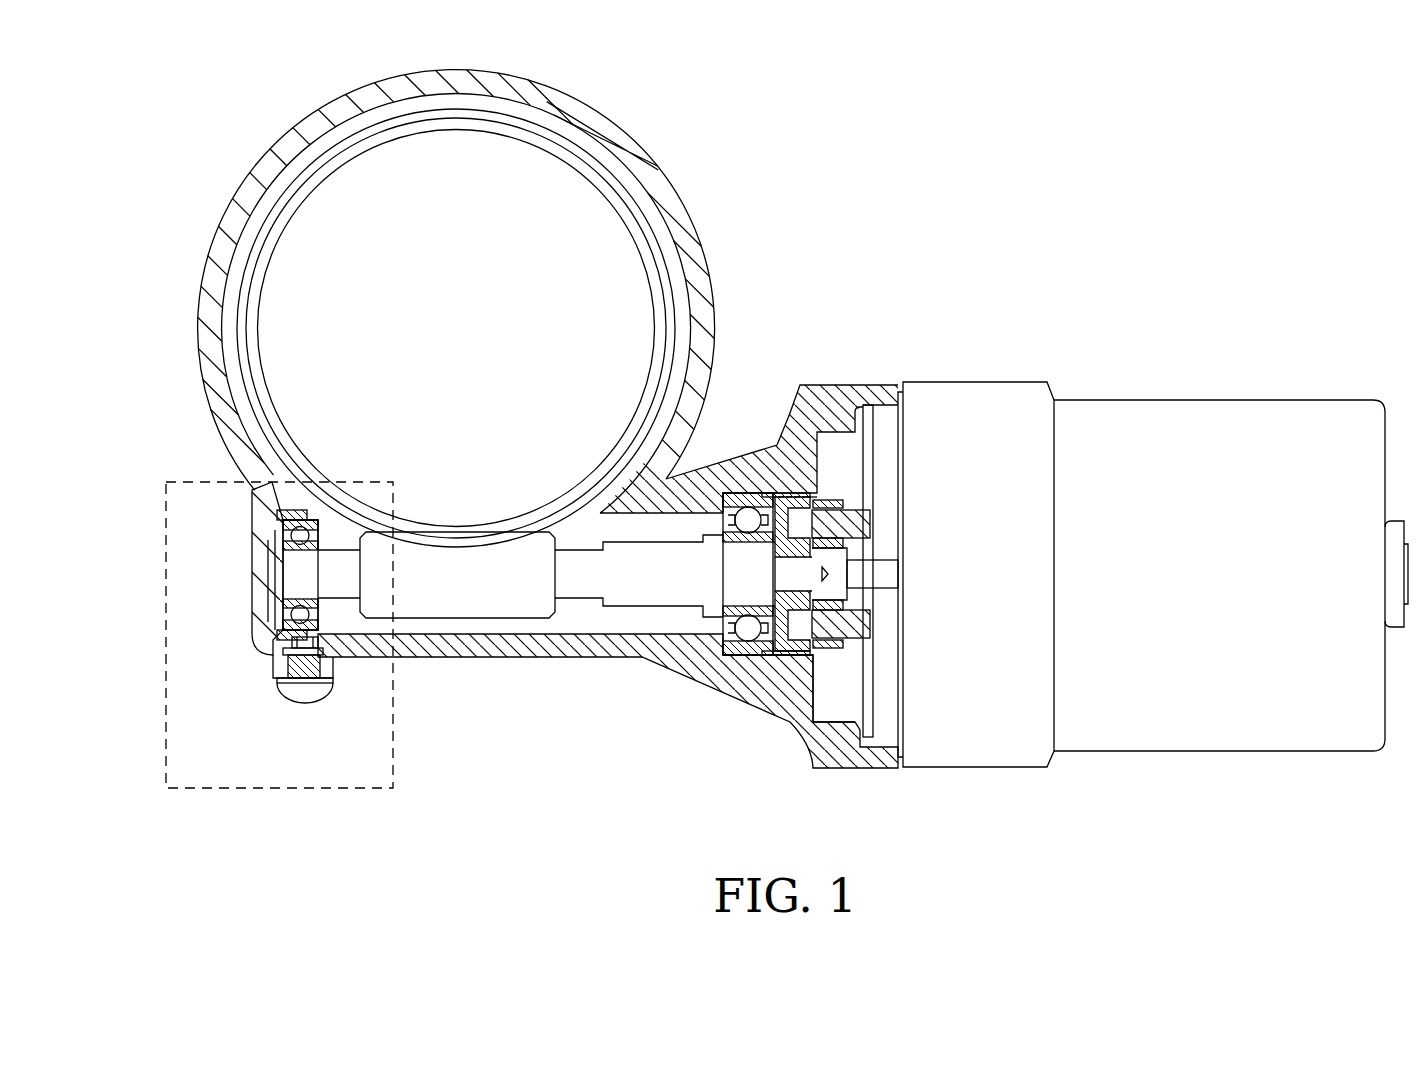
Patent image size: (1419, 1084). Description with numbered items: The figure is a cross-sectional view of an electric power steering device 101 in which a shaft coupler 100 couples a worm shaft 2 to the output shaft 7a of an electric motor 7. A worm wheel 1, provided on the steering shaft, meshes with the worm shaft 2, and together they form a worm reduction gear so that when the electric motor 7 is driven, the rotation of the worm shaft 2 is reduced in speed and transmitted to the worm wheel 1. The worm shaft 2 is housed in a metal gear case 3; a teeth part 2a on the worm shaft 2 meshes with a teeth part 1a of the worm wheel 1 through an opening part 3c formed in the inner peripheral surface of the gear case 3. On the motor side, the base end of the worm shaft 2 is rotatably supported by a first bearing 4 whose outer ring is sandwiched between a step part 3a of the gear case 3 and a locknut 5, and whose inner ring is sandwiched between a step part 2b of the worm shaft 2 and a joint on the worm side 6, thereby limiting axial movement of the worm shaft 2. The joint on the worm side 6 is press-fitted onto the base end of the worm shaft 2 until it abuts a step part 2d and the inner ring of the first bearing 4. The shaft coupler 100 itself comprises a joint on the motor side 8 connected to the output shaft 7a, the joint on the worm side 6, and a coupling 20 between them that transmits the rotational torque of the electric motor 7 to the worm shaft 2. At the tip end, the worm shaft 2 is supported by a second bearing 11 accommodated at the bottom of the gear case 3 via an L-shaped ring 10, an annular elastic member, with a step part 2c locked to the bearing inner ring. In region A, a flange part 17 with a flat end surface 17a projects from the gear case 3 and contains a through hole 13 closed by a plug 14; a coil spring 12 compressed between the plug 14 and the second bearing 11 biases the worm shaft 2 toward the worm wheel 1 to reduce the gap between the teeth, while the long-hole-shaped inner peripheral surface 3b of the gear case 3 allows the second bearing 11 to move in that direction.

The worm wheel 1 is at (530, 508).
The teeth part of the worm wheel 1a is at (458, 548).
The worm shaft 2 is at (503, 582).
The teeth part of the worm shaft 2a is at (441, 618).
The step part of the worm shaft 2b is at (733, 478).
The step part of the worm shaft 2c is at (318, 540).
The step part of the worm shaft 2d is at (790, 660).
The gear case 3 is at (578, 645).
The step part of the gear case 3a is at (760, 655).
The inner peripheral surface of the gear case 3b is at (296, 508).
The opening part 3c is at (592, 515).
The first bearing 4 is at (750, 648).
The locknut 5 is at (750, 472).
The joint on the worm side 6 is at (785, 498).
The electric motor 7 is at (1250, 452).
The output shaft 7a is at (870, 574).
The joint on the motor side 8 is at (855, 508).
The L-shaped ring 10 is at (272, 520).
The second bearing 11 is at (270, 556).
The coil spring 12 is at (272, 640).
The through hole 13 is at (310, 684).
The plug 14 is at (290, 686).
The flange part 17 is at (330, 673).
The end surface 17a is at (320, 688).
The coupling 20 is at (829, 498).
The shaft coupler 100 is at (826, 657).
The electric power steering device 101 is at (1011, 336).
The region A is at (165, 756).